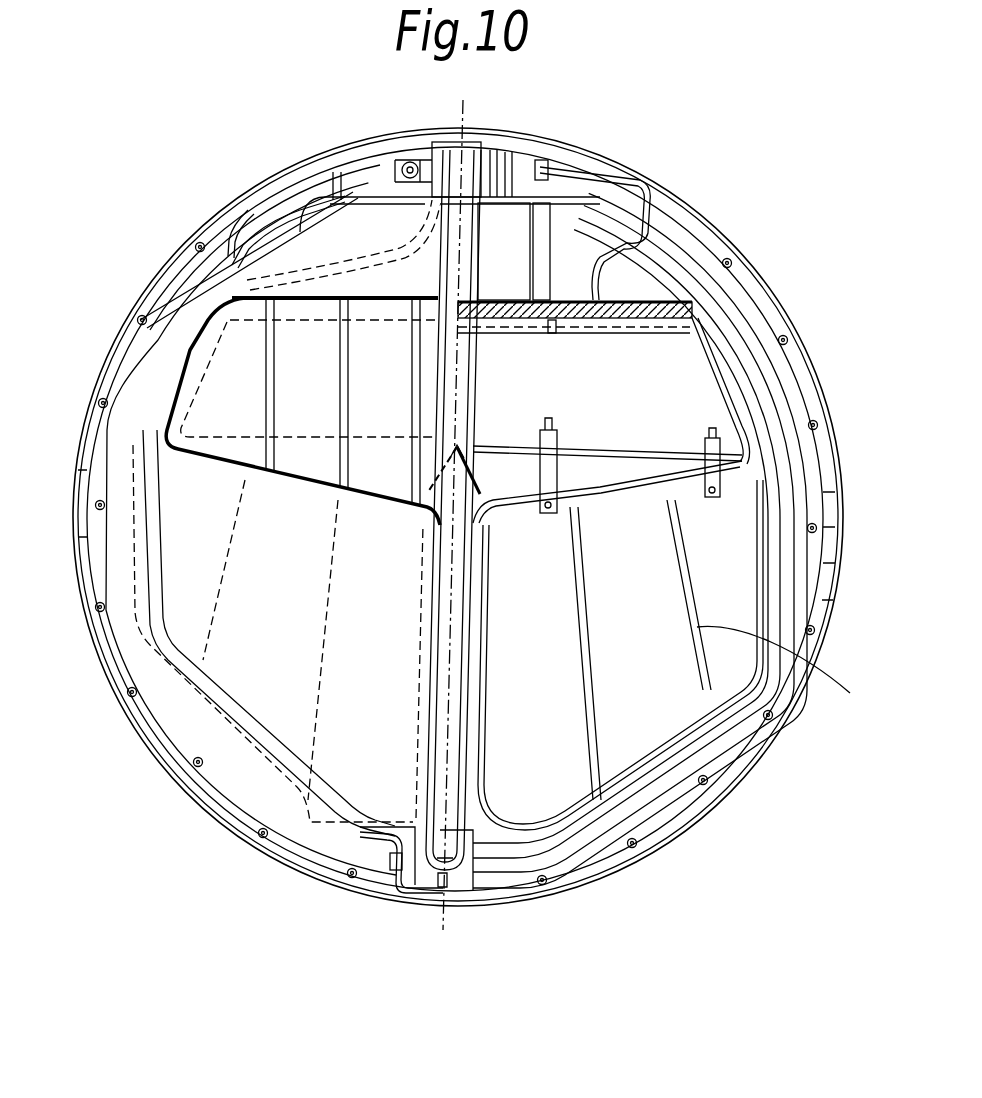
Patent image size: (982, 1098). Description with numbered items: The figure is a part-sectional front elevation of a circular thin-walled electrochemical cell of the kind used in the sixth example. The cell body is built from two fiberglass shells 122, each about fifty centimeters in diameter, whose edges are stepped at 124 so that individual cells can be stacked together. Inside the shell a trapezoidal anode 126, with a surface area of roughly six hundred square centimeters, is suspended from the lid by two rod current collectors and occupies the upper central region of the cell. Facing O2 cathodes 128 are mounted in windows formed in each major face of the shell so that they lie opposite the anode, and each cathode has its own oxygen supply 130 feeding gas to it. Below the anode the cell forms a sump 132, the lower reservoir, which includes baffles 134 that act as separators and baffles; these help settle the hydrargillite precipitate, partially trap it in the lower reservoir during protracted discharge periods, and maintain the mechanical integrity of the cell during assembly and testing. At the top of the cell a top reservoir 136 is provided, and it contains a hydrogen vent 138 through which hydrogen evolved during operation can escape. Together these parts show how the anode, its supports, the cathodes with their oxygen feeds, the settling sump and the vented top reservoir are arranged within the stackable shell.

The fiberglass shells 122 is at (100, 583).
The stepped edges 124 is at (643, 790).
The trapezoidal anode 126 is at (233, 377).
The O2 cathodes 128 is at (670, 300).
The oxygen supply 130 is at (660, 267).
The sump 132 is at (247, 680).
The baffles 134 is at (679, 655).
The top reservoir 136 is at (370, 223).
The hydrogen vent 138 is at (482, 160).